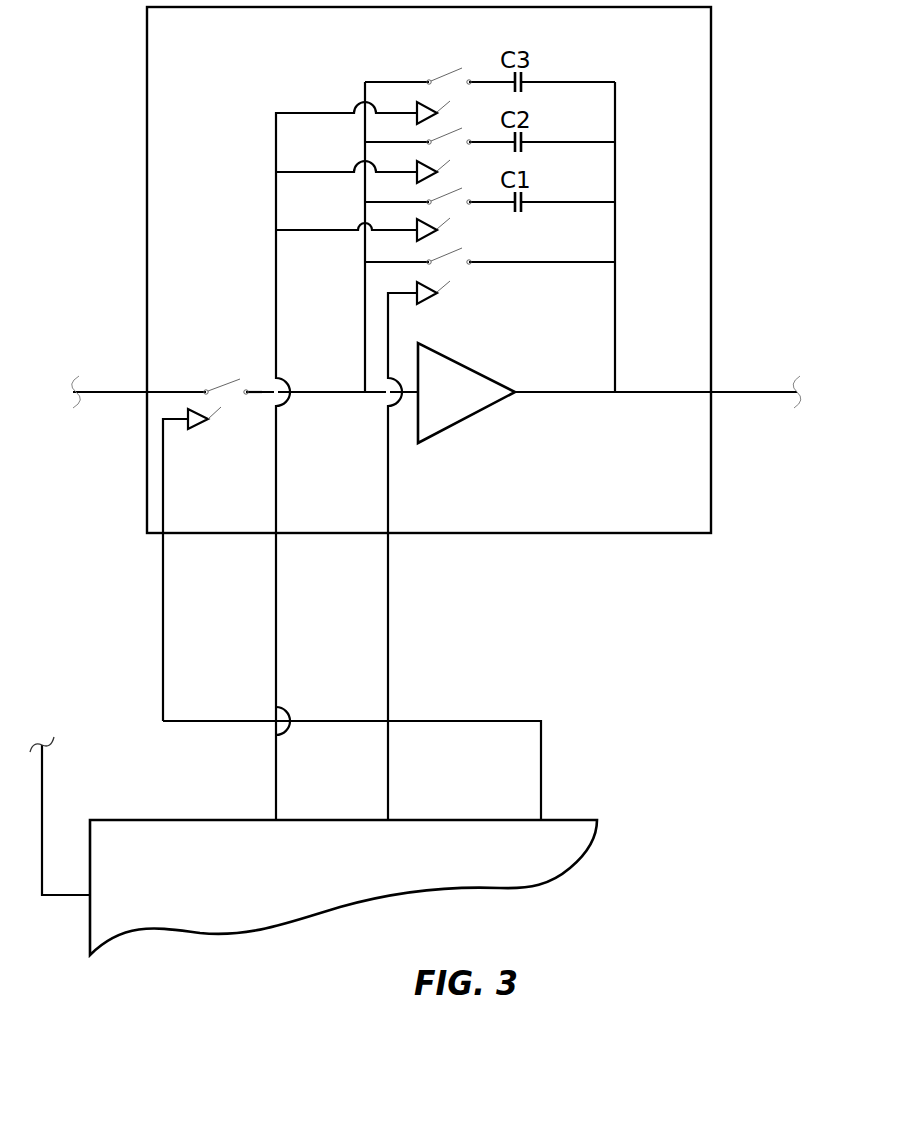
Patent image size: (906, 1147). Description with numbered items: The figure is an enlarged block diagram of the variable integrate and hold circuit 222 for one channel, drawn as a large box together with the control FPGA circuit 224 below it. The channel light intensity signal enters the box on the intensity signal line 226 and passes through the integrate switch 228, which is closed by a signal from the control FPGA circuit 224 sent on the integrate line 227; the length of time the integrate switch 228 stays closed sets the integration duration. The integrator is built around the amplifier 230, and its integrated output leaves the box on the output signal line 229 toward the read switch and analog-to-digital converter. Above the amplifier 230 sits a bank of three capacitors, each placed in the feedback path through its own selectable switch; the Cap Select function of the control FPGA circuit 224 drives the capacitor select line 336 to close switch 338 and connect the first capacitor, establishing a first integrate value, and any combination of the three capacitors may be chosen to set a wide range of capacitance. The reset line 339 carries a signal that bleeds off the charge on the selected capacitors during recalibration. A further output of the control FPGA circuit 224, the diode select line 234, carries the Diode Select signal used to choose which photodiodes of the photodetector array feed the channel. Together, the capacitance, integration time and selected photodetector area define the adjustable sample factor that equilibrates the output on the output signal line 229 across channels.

The variable integrate and hold circuit 222 is at (711, 200).
The control FPGA circuit 224 is at (570, 820).
The intensity signal line 226 is at (118, 388).
The integrate line 227 is at (475, 721).
The integrate switch 228 is at (243, 342).
The output signal line 229 is at (727, 392).
The amplifier 230 is at (457, 362).
The diode select line 234 is at (42, 782).
The capacitor select line 336 is at (276, 566).
The switch 338 is at (476, 224).
The reset line 339 is at (388, 566).